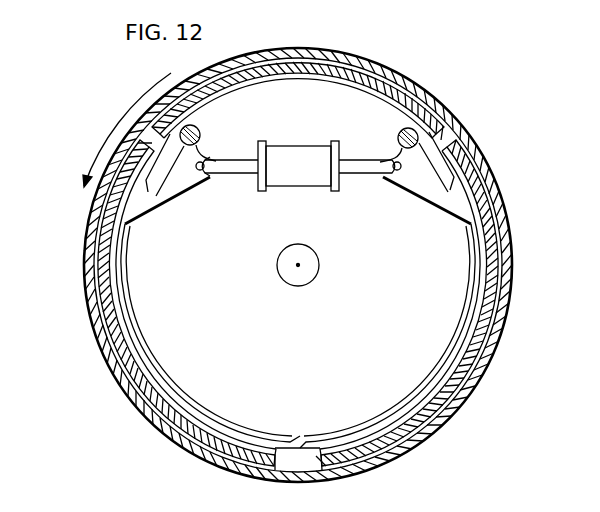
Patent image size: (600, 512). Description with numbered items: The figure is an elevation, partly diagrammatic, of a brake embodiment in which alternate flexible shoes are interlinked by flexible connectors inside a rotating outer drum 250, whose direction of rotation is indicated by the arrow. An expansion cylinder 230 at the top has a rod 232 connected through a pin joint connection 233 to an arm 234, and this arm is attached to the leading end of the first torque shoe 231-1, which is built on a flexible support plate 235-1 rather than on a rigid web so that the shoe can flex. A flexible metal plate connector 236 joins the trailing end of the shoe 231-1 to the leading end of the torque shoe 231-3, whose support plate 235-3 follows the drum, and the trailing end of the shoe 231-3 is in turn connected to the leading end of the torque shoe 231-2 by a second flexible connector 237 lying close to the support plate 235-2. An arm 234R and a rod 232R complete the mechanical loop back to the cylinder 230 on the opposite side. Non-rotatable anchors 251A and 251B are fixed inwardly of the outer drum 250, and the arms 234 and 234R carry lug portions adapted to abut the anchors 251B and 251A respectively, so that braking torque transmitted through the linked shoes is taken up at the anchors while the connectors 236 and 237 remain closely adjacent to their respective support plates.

The outer drum 250 is at (90, 322).
The first torque shoe 231-1 is at (114, 304).
The torque shoe 231-2 is at (473, 343).
The torque shoe 231-3 is at (267, 76).
The flexible support plate 235-1 is at (110, 257).
The flexible support plate 235-2 is at (484, 308).
The shoe rim (third shoe) 235-3 is at (356, 82).
The arm 234 is at (168, 207).
The arm 234R is at (442, 206).
The expansion cylinder 230 is at (299, 188).
The rod 232 is at (233, 174).
The rod 232R is at (353, 174).
The pin joint connection 233 is at (208, 158).
The non-rotatable anchor 251A is at (400, 133).
The non-rotatable anchor 251B is at (200, 130).
The flexible metal plate connector 236 is at (398, 418).
The second flexible connector 237 is at (160, 372).